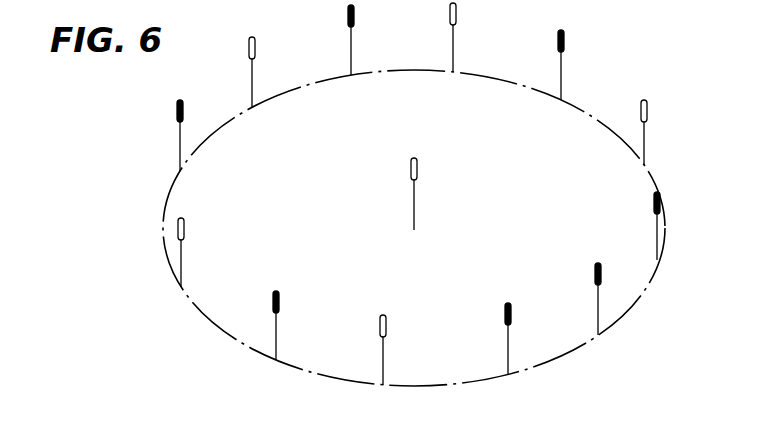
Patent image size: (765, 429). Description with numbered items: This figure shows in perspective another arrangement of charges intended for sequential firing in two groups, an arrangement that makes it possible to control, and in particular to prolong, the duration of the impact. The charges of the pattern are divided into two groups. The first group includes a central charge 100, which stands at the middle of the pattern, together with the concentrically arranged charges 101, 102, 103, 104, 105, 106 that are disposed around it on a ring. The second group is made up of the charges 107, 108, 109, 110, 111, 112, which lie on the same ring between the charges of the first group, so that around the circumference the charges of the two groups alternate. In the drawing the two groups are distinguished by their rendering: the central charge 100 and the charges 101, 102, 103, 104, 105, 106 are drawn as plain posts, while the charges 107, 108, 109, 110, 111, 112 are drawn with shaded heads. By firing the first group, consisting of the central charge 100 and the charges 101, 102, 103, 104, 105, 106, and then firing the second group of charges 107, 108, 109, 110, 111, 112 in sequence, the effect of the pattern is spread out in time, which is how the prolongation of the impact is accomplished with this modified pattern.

The central charge 100 is at (417, 167).
The charge 101 is at (456, 12).
The charge 102 is at (647, 109).
The charge 103 is at (601, 272).
The charge 104 is at (386, 324).
The charge 105 is at (184, 227).
The charge 106 is at (255, 46).
The charge 107 is at (564, 39).
The charge 108 is at (660, 201).
The charge 109 is at (511, 312).
The charge 110 is at (279, 300).
The charge 111 is at (183, 109).
The charge 112 is at (354, 14).